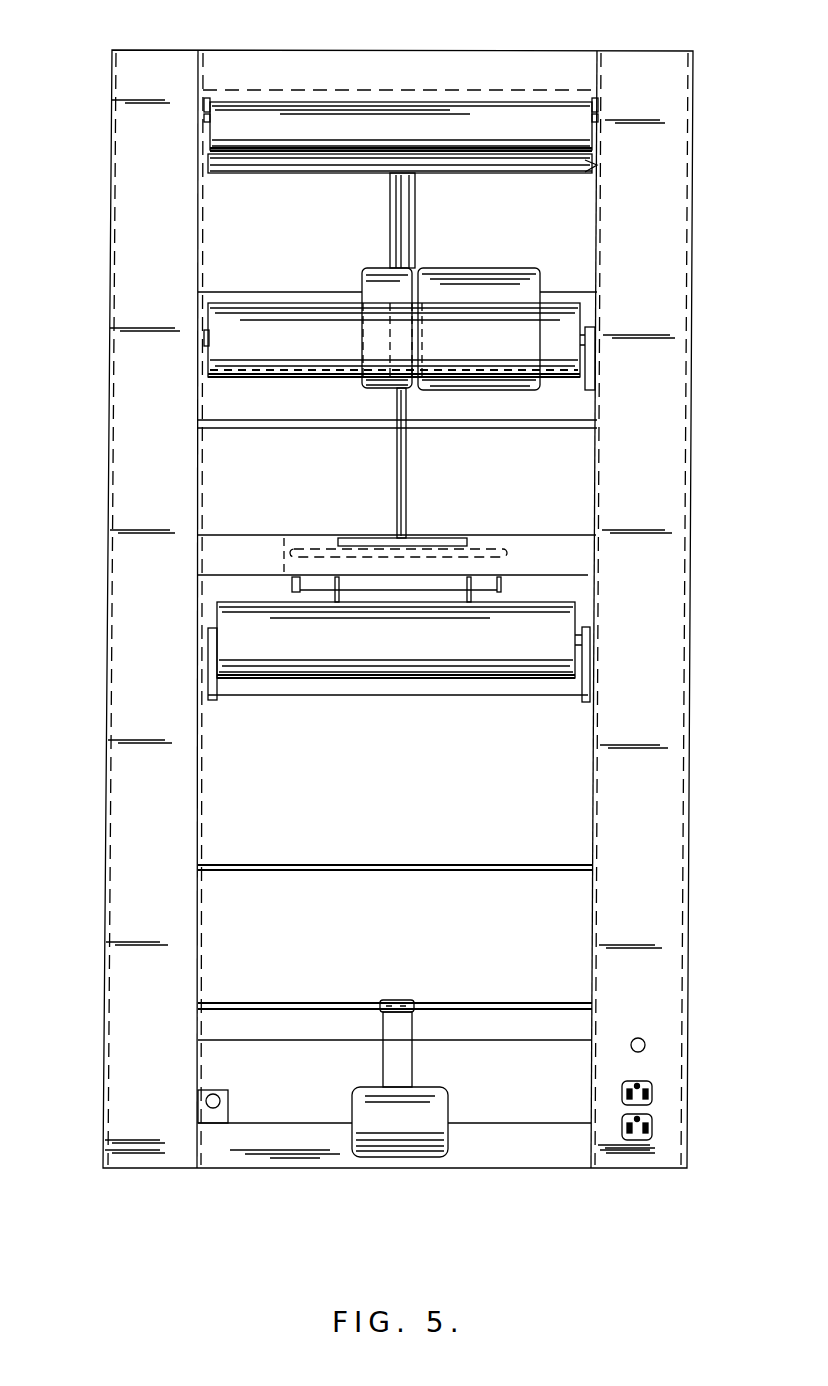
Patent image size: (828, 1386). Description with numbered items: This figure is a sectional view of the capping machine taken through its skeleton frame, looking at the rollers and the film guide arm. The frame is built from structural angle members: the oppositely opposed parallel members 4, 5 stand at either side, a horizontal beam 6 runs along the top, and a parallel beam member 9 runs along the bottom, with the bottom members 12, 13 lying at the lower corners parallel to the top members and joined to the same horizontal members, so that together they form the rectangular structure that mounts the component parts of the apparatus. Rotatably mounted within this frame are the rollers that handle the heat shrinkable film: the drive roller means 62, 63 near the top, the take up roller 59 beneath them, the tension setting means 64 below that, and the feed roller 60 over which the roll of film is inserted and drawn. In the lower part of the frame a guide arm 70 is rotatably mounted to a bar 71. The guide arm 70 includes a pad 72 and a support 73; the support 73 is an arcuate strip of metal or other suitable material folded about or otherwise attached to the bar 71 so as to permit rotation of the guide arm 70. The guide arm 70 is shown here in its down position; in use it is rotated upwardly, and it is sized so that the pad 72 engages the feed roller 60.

The parallel member 4 is at (652, 65).
The parallel member 5 is at (150, 62).
The horizontal beam 6 is at (402, 62).
The parallel beam member 9 is at (265, 1155).
The bottom member 12 is at (140, 1170).
The bottom member 13 is at (636, 1170).
The take up roller 59 is at (568, 327).
The feed roller 60 is at (553, 632).
The drive roller means 62 is at (578, 130).
The drive roller means 63 is at (585, 160).
The tension setting means 64 is at (580, 425).
The guide arm 70 is at (428, 1123).
The bar 71 is at (468, 1003).
The pad 72 is at (445, 1138).
The support 73 is at (412, 1068).